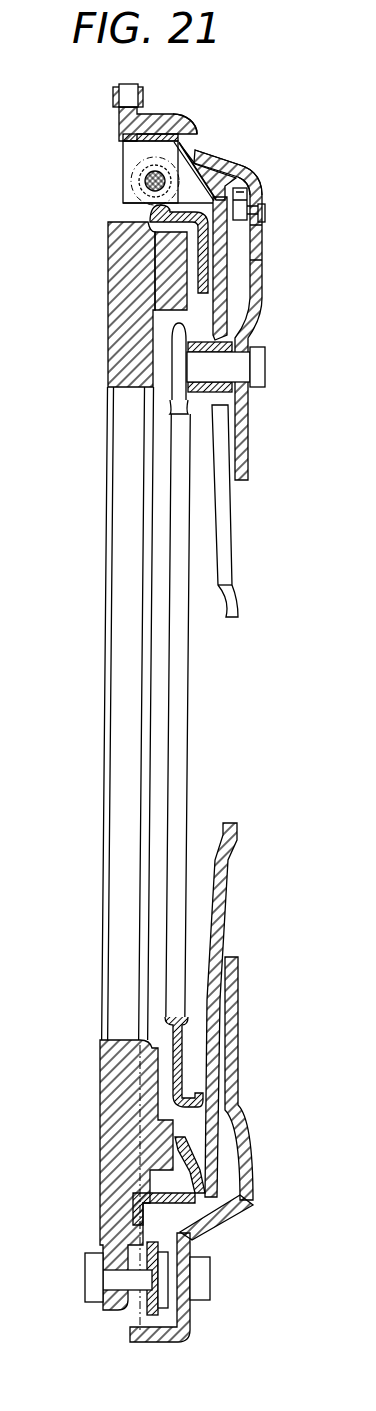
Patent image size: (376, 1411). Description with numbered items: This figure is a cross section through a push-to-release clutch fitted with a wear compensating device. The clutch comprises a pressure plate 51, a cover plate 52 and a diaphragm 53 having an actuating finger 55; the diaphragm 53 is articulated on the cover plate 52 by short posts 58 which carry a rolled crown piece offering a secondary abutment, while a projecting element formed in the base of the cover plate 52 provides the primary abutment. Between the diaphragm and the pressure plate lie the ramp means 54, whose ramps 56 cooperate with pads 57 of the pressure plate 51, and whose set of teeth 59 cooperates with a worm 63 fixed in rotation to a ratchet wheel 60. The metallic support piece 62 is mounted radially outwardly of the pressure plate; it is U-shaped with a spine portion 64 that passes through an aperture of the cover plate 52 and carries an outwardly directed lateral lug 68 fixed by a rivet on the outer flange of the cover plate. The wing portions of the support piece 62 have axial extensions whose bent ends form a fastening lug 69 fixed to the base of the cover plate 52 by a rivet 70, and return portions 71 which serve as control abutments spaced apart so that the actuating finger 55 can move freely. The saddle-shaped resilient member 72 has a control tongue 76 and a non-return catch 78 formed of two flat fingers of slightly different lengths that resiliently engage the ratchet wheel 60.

The pressure plate 51 is at (107, 328).
The cover plate 52 is at (258, 330).
The diaphragm 53 is at (232, 548).
The ramp means 54 is at (258, 240).
The actuating finger 55 is at (265, 212).
The ramps 56 is at (208, 272).
The pads 57 is at (180, 295).
The short posts 58 is at (240, 370).
The set of teeth 59 is at (152, 212).
The ratchet wheel 60 is at (135, 185).
The support piece 62 is at (200, 130).
The worm 63 is at (122, 170).
The spine portion 64 is at (177, 118).
The lateral lug 68 is at (122, 118).
The fastening lug 69 is at (248, 182).
The rivet 70 is at (262, 208).
The return portions 71 is at (240, 178).
The resilient member 72 is at (123, 147).
The control tongue 76 is at (207, 170).
The non-return catch 78 is at (183, 152).